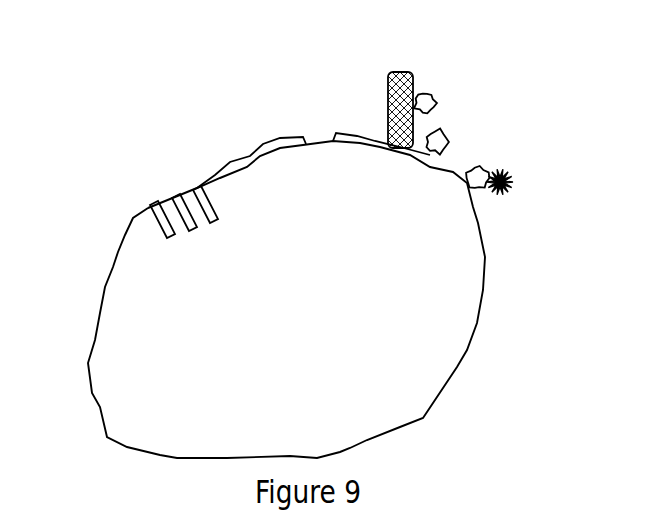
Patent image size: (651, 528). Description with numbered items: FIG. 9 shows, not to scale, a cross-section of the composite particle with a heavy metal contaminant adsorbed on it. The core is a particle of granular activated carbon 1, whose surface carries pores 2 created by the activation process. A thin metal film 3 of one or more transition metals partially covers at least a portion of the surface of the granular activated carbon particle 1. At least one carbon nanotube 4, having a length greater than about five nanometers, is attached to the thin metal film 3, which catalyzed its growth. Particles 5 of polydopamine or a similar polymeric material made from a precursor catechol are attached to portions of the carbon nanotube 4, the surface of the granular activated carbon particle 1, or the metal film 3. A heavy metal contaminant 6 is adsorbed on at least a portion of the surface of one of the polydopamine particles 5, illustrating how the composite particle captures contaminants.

The granular activated carbon particle 1 is at (103, 283).
The pores 2 is at (188, 188).
The thin metal film 3 is at (333, 132).
The carbon nanotube 4 is at (385, 78).
The polydopamine particles 5 is at (480, 160).
The heavy metal contaminant 6 is at (513, 187).